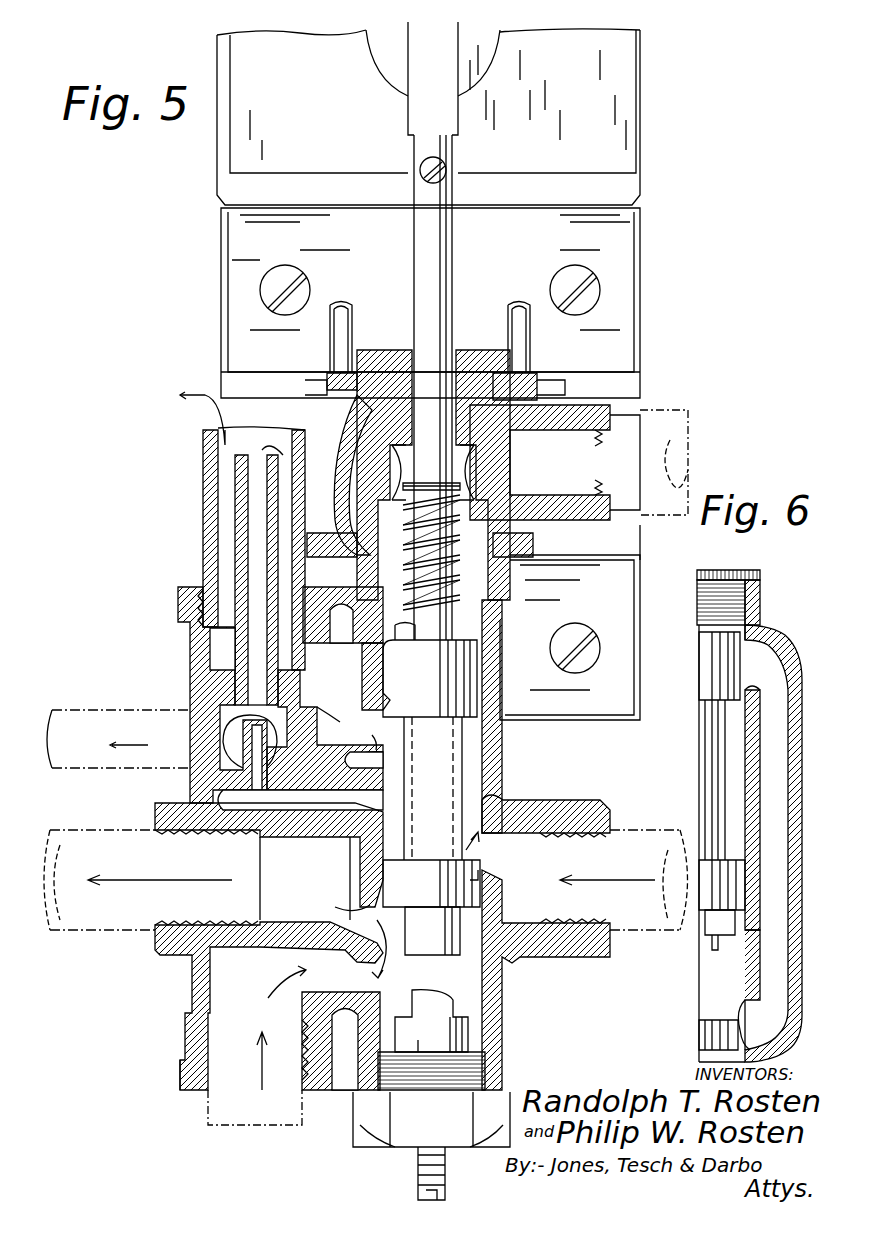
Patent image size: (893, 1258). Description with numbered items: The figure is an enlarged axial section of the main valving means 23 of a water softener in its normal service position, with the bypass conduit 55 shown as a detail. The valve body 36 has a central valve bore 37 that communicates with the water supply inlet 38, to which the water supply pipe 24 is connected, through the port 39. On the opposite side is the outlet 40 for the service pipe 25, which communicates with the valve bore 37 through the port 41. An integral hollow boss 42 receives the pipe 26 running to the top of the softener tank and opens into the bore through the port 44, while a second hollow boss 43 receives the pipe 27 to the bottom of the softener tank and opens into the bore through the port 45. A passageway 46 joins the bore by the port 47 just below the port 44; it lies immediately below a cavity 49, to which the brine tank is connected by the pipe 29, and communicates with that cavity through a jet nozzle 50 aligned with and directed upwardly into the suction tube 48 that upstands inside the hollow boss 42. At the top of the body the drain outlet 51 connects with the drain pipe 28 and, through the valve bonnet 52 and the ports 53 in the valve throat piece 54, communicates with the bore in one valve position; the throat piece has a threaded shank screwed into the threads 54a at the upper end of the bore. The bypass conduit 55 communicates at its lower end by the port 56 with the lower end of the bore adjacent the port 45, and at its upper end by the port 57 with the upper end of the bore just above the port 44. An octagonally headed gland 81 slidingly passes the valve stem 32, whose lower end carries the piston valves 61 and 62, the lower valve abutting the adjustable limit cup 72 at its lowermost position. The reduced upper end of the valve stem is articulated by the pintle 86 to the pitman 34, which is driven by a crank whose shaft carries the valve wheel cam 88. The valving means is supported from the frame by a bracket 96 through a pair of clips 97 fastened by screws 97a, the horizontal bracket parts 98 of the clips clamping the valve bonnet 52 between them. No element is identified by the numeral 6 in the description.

In FIG. 5, the valve wheel cam 88 is at (388, 68).
In FIG. 5, the pitman 34 is at (455, 112).
In FIG. 5, the pintle 86 is at (445, 168).
In FIG. 5, the clips 97 is at (230, 325).
In FIG. 5, the screws 97a is at (305, 285).
In FIG. 5, the valve stem 32 is at (452, 265).
In FIG. 5, the gland 81 is at (372, 352).
In FIG. 5, the bracket parts 98 is at (335, 392).
In FIG. 5, the valve bonnet 52 is at (348, 482).
In FIG. 5, the ports 53 is at (392, 462).
In FIG. 5, the valve throat piece 54 is at (478, 506).
In FIG. 5, the threads 54a is at (437, 579).
In FIG. 5, the drain outlet 51 is at (615, 412).
In FIG. 5, the drain pipe 28 is at (672, 400).
In FIG. 5, the bracket 96 is at (640, 465).
In FIG. 5, the nut 6 is at (440, 572).
In FIG. 5, the pipe 26 is at (203, 485).
In FIG. 5, the hollow boss 42 is at (180, 630).
In FIG. 5, the suction tube 48 is at (235, 655).
In FIG. 5, the cavity 49 is at (280, 738).
In FIG. 5, the jet nozzle 50 is at (235, 745).
In FIG. 5, the pipe 29 is at (145, 710).
In FIG. 5, the port 44 is at (362, 722).
In FIG. 5, the passageway 46 is at (290, 782).
In FIG. 5, the port 47 is at (362, 798).
In FIG. 5, the outlet 40 is at (162, 806).
In FIG. 5, the service pipe 25 is at (122, 940).
In FIG. 5, the port 41 is at (362, 900).
In FIG. 5, the port 45 is at (366, 968).
In FIG. 5, the hollow boss 43 is at (180, 1070).
In FIG. 5, the pipe 27 is at (208, 1118).
In FIG. 5, the port 57 is at (410, 660).
In FIG. 6, the port 57 is at (735, 652).
In FIG. 5, the piston valve 61 is at (472, 690).
In FIG. 6, the piston valve 61 is at (745, 688).
In FIG. 5, the piston valve 62 is at (482, 892).
In FIG. 6, the piston valve 62 is at (742, 862).
In FIG. 5, the port 56 is at (482, 1010).
In FIG. 6, the port 56 is at (738, 1005).
In FIG. 5, the limit cup 72 is at (465, 1042).
In FIG. 6, the limit cup 72 is at (710, 1034).
In FIG. 5, the valve body 36 is at (498, 765).
In FIG. 5, the valve bore 37 is at (498, 786).
In FIG. 5, the water supply inlet 38 is at (578, 802).
In FIG. 5, the port 39 is at (505, 842).
In FIG. 5, the water supply pipe 24 is at (660, 932).
In FIG. 5, the valving means 23 is at (516, 994).
In FIG. 6, the bypass conduit 55 is at (778, 630).